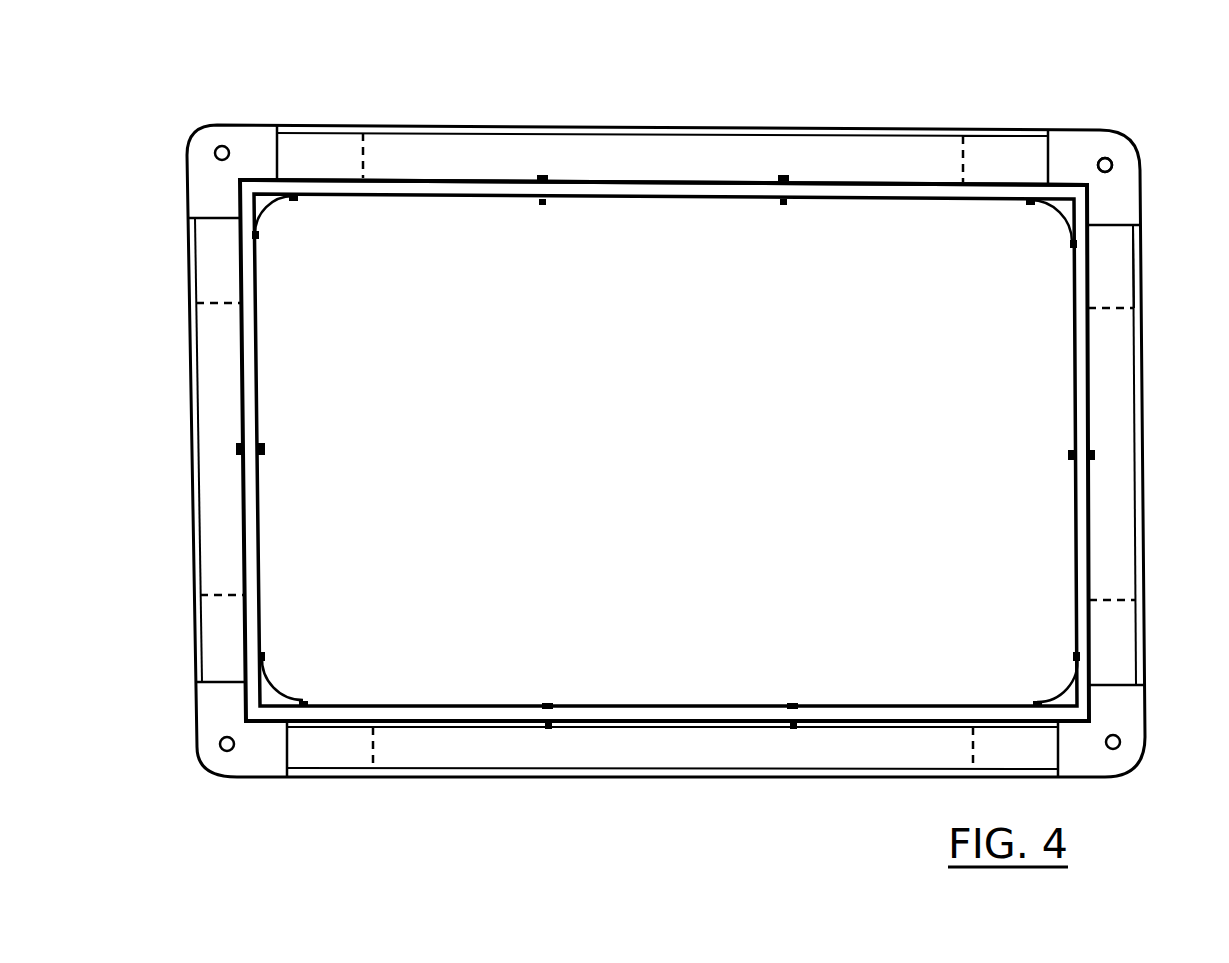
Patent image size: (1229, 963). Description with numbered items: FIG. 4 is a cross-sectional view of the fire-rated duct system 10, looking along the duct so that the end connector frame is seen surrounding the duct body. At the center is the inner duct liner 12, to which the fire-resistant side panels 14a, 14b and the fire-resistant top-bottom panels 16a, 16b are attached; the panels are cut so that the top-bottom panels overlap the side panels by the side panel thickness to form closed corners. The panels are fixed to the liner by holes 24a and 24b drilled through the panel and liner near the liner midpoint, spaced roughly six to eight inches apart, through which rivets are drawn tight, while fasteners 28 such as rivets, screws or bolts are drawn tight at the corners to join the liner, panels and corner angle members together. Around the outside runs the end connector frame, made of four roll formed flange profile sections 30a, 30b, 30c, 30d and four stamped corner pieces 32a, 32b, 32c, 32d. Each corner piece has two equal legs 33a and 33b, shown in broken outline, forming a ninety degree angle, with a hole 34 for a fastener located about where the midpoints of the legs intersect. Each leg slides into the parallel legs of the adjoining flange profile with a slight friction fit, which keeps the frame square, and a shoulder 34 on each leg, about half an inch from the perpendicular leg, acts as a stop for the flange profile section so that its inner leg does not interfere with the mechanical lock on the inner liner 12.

The fire-rated duct system 10 is at (850, 92).
The inner duct liner 12 is at (263, 380).
The fire-resistant side panel 14a is at (1080, 487).
The fire-resistant side panel 14b is at (247, 497).
The fire-resistant top-bottom panel 16a is at (663, 187).
The fire-resistant top-bottom panel 16b is at (695, 710).
The hole 24a is at (542, 205).
The hole 24b is at (783, 205).
The fastener 28 is at (262, 237).
The flange profile section 30a is at (653, 147).
The flange profile section 30b is at (1123, 540).
The flange profile section 30c is at (713, 752).
The flange profile section 30d is at (213, 522).
The corner piece 32a is at (1133, 143).
The corner piece 32b is at (1133, 770).
The corner piece 32c is at (215, 773).
The corner piece 32d is at (218, 125).
The leg of corner piece 33a is at (1007, 140).
The leg of corner piece 33b is at (1123, 263).
The hole / shoulder 34 is at (973, 133).